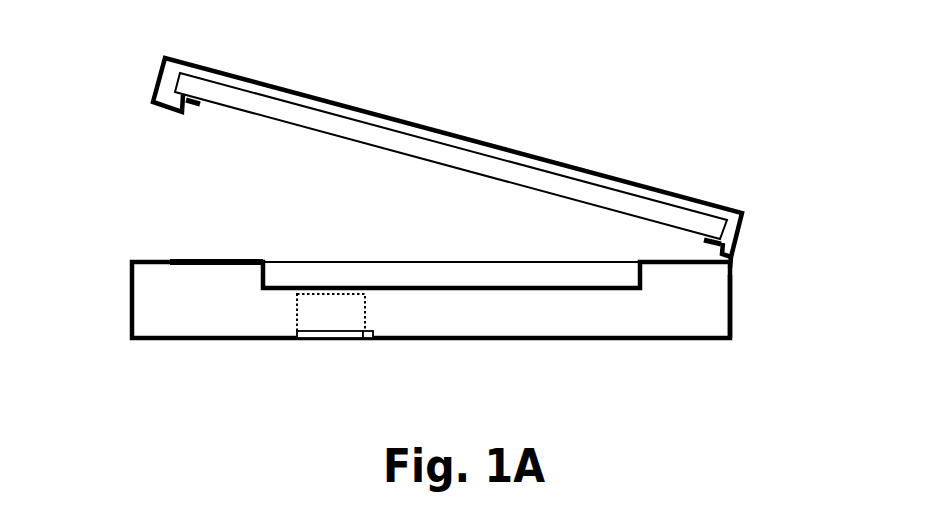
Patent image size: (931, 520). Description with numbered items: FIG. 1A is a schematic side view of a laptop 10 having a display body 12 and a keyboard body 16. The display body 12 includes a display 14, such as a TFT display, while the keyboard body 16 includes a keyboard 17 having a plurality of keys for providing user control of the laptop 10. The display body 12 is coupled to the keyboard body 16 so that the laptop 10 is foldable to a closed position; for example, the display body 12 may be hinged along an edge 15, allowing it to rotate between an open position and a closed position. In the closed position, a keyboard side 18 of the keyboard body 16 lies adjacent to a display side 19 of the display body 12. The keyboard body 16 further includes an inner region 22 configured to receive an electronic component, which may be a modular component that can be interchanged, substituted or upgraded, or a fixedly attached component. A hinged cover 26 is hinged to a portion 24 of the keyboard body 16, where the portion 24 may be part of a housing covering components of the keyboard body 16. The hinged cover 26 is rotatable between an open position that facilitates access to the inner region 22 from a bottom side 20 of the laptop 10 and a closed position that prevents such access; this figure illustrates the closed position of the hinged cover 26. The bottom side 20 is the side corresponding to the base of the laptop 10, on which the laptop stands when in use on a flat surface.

The laptop 10 is at (742, 83).
The display body 12 is at (165, 58).
The display 14 is at (374, 133).
The edge 15 is at (740, 262).
The keyboard body 16 is at (157, 297).
The keyboard 17 is at (315, 275).
The keyboard side 18 is at (168, 246).
The display side 19 is at (150, 130).
The bottom side 20 is at (180, 375).
The inner region 22 is at (357, 324).
The portion 24 is at (368, 341).
The hinged cover 26 is at (314, 341).